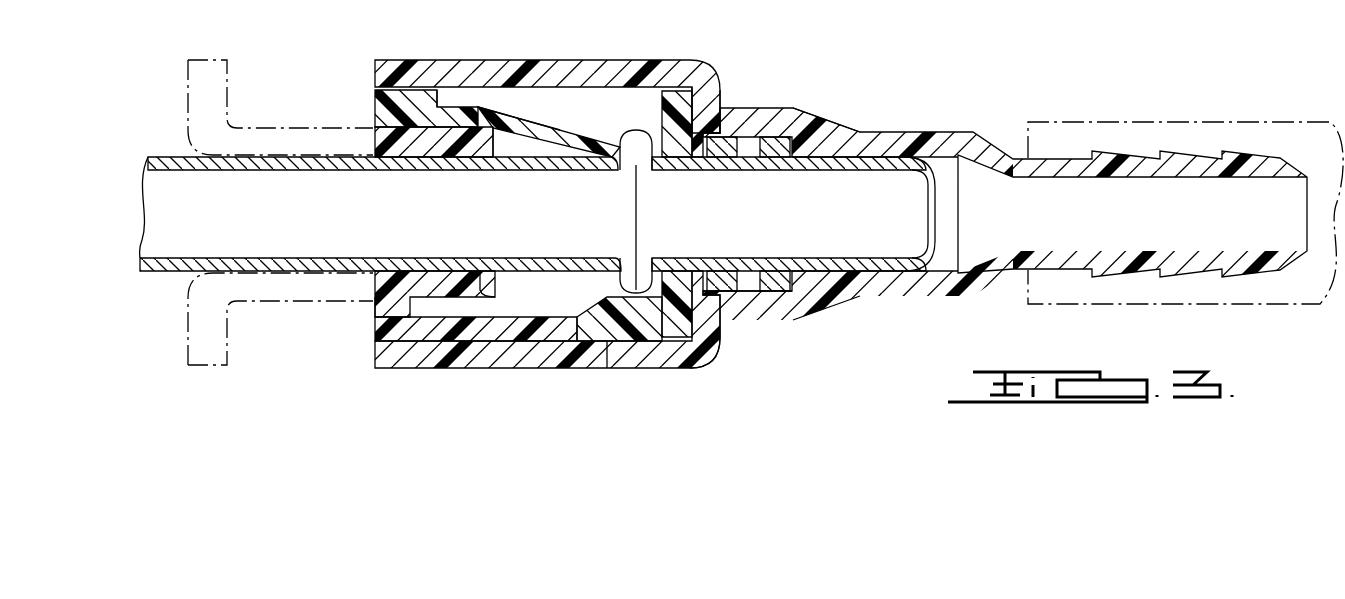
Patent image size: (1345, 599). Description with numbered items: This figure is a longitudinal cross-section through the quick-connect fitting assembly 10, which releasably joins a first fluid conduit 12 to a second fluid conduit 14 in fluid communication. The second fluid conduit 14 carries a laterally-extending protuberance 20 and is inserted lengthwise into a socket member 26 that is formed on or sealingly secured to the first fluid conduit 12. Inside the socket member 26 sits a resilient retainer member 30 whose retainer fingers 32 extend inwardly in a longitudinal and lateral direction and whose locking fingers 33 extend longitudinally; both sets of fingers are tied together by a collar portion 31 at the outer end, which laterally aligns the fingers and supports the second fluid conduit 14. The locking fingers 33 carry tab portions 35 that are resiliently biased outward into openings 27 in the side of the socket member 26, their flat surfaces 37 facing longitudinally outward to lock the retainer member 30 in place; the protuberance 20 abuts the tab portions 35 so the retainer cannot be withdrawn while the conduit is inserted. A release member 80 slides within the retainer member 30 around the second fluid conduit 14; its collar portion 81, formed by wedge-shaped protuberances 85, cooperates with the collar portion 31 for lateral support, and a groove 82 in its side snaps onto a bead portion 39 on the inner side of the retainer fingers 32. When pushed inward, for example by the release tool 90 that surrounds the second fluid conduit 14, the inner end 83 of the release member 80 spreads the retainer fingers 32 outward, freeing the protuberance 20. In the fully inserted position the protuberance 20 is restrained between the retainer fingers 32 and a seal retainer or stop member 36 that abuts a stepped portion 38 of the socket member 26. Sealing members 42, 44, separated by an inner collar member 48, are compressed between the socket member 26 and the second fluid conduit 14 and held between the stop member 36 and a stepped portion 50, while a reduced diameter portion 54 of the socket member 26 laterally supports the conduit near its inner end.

The quick-connect fitting assembly 10 is at (710, 30).
The first fluid conduit 12 is at (1165, 120).
The second fluid conduit 14 is at (155, 273).
The protuberance 20 is at (637, 129).
The socket member 26 is at (494, 368).
The openings 27 is at (661, 357).
The retainer member 30 is at (480, 105).
The collar portion 31 is at (435, 97).
The retainer fingers 32 is at (571, 141).
The locking fingers 33 is at (563, 328).
The tab portions 35 is at (645, 324).
The seal retainer or stop member 36 is at (708, 350).
The flat surfaces 37 is at (601, 350).
The stepped portion 38 is at (702, 91).
The bead portion 39 is at (501, 107).
The sealing member 42 is at (733, 319).
The sealing member 44 is at (780, 289).
The inner collar member or spacer 48 is at (740, 138).
The stepped portion 50 is at (784, 158).
The reduced diameter portion 54 is at (853, 288).
The release member 80 is at (371, 309).
The collar portion 81 is at (373, 325).
The groove 82 is at (477, 293).
The inner end 83 is at (495, 131).
The wedge-shaped protuberances 85 is at (407, 312).
The release tool 90 is at (255, 338).